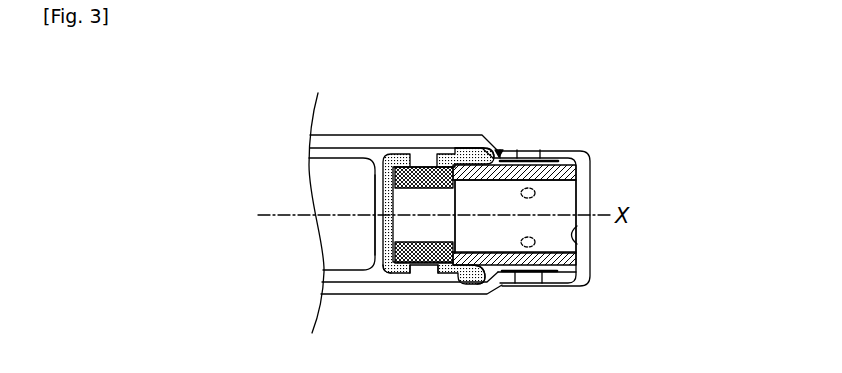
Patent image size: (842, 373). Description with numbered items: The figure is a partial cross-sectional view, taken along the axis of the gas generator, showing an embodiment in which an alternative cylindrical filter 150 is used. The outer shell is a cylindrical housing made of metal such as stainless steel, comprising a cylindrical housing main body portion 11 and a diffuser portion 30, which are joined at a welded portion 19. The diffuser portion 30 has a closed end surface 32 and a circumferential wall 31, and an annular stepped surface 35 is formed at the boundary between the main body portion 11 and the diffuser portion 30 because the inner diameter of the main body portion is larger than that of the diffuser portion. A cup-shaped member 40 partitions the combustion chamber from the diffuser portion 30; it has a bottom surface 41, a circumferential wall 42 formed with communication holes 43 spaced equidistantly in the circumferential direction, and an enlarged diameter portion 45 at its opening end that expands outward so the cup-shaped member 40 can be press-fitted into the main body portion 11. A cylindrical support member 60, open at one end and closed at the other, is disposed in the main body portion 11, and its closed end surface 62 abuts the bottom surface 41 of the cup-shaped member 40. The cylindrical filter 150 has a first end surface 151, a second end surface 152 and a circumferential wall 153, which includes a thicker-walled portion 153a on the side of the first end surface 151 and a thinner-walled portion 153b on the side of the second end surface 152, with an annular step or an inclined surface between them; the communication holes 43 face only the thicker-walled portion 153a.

The cylindrical housing main body portion 11 is at (367, 130).
The welded portion 19 is at (499, 151).
The diffuser portion 30 is at (591, 149).
The housing wall 31 is at (531, 153).
The closed end surface 32 is at (585, 245).
The annular stepped surface 35 is at (473, 283).
The cup-shaped member 40 is at (405, 142).
The bottom surface 41 is at (397, 228).
The circumferential wall 42 is at (452, 146).
The communication holes 43 is at (422, 273).
The enlarged diameter portion 45 is at (475, 144).
The cylindrical support member 60 is at (342, 170).
The closed end surface 62 is at (372, 232).
The cylindrical filter 150 is at (462, 252).
The first end surface 151 is at (384, 269).
The second end surface 152 is at (578, 261).
The circumferential wall 153 is at (498, 265).
The thicker-walled portion 153a is at (457, 229).
The thinner-walled portion 153b is at (567, 273).